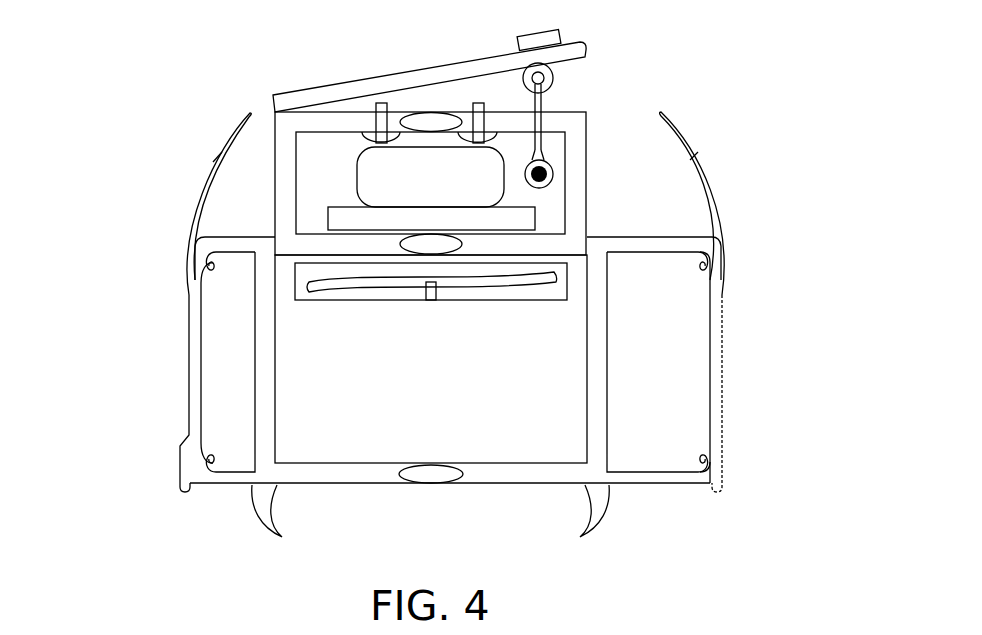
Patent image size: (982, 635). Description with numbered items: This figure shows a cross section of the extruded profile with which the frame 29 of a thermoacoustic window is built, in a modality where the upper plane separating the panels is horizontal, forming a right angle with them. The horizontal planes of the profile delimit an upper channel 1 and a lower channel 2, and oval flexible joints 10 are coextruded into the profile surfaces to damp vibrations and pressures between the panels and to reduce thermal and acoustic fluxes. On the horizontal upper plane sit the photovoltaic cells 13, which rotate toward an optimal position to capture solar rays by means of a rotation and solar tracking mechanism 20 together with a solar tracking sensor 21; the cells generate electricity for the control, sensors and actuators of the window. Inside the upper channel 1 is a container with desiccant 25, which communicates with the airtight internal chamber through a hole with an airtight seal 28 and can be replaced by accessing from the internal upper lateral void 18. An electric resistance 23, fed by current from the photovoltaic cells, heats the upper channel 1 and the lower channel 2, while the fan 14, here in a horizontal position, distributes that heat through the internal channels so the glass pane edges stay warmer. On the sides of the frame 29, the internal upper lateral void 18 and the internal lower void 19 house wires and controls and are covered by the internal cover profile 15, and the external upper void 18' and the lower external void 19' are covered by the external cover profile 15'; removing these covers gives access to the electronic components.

The upper channel 1 is at (442, 276).
The lower channel 2 is at (348, 392).
The flexible joints 10 is at (400, 120).
The photovoltaic cells 13 is at (320, 67).
The fan 14 is at (293, 282).
The internal cover profile 15 is at (769, 377).
The external cover profile 15' is at (134, 377).
The internal upper lateral void 18 is at (725, 203).
The external upper void 18' is at (169, 204).
The internal lower void 19 is at (622, 474).
The lower external void 19' is at (244, 470).
The rotation and solar tracking mechanism 20 is at (643, 125).
The solar tracking sensor 21 is at (562, 35).
The electric resistance 23 is at (432, 220).
The container with desiccant 25 is at (440, 176).
The airtight seal 28 is at (486, 138).
The frame 29 is at (610, 360).